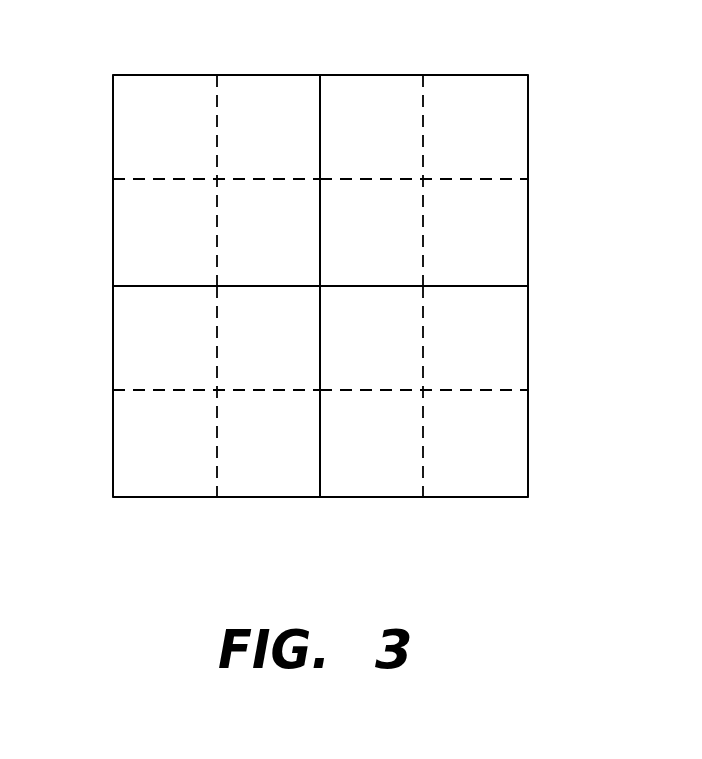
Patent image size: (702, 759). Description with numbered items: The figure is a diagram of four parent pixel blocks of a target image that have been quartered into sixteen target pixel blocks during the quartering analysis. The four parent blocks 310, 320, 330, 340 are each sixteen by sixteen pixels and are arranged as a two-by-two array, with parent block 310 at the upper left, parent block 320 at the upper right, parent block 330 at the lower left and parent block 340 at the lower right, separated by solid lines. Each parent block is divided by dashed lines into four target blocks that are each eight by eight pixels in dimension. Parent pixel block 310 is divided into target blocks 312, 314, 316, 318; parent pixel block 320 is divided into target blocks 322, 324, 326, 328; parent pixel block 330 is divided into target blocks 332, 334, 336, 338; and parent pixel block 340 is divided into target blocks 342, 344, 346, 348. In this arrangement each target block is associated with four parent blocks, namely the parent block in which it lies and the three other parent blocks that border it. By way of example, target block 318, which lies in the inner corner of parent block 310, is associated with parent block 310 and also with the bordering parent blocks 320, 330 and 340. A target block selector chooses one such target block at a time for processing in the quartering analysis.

The parent pixel block 310 is at (172, 75).
The target block 312 is at (165, 127).
The target block 314 is at (268, 127).
The target block 316 is at (165, 232).
The target block 318 is at (268, 232).
The parent pixel block 320 is at (363, 75).
The target block 322 is at (371, 127).
The target block 324 is at (475, 127).
The target block 326 is at (371, 232).
The target block 328 is at (475, 232).
The parent pixel block 330 is at (168, 497).
The target block 332 is at (165, 338).
The target block 334 is at (268, 338).
The target block 336 is at (165, 443).
The target block 338 is at (268, 443).
The parent pixel block 340 is at (472, 497).
The target block 342 is at (371, 338).
The target block 344 is at (475, 338).
The target block 346 is at (371, 443).
The target block 348 is at (475, 443).